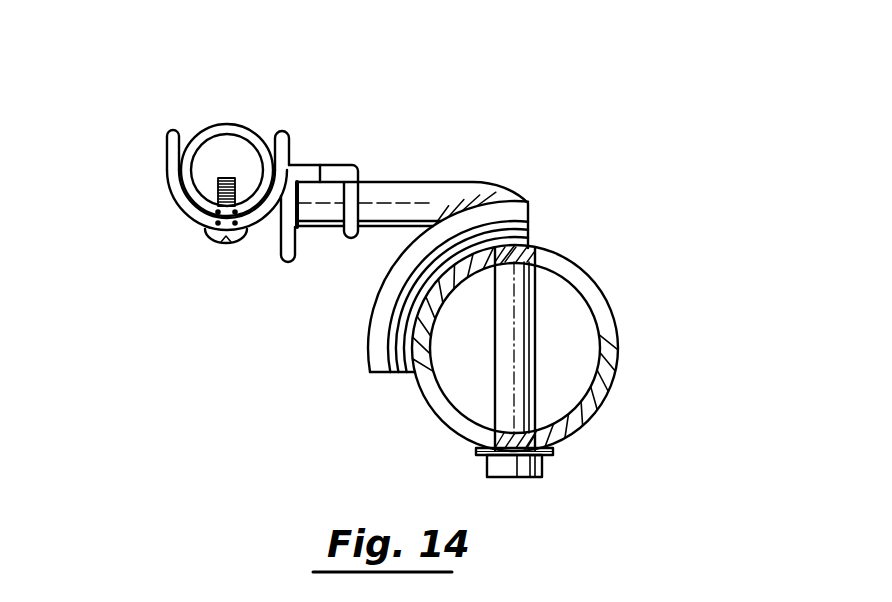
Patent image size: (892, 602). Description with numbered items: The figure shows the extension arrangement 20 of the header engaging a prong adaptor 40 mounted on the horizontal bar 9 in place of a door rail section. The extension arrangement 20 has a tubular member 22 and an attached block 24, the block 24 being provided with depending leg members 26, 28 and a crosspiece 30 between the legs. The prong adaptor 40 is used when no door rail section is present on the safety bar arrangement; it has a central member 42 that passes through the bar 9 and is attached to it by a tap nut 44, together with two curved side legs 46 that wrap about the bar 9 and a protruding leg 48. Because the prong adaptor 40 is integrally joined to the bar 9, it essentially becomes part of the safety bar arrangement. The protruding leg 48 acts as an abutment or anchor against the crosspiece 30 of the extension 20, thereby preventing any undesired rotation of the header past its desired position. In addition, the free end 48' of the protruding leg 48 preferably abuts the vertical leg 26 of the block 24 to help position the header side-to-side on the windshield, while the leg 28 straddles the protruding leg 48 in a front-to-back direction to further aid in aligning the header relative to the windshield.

The extension arrangement 20 is at (187, 98).
The tubular member 22 is at (227, 124).
The block 24 is at (162, 178).
The leg member 26 is at (283, 256).
The leg member 28 is at (353, 240).
The crosspiece 30 is at (312, 164).
The prong adaptor 40 is at (520, 157).
The protruding leg 48 is at (412, 183).
The free end 48' is at (366, 150).
The curved side leg 46 is at (370, 345).
The central member 42 is at (500, 361).
The tap nut 44 is at (543, 460).
The horizontal bar 9 is at (618, 318).